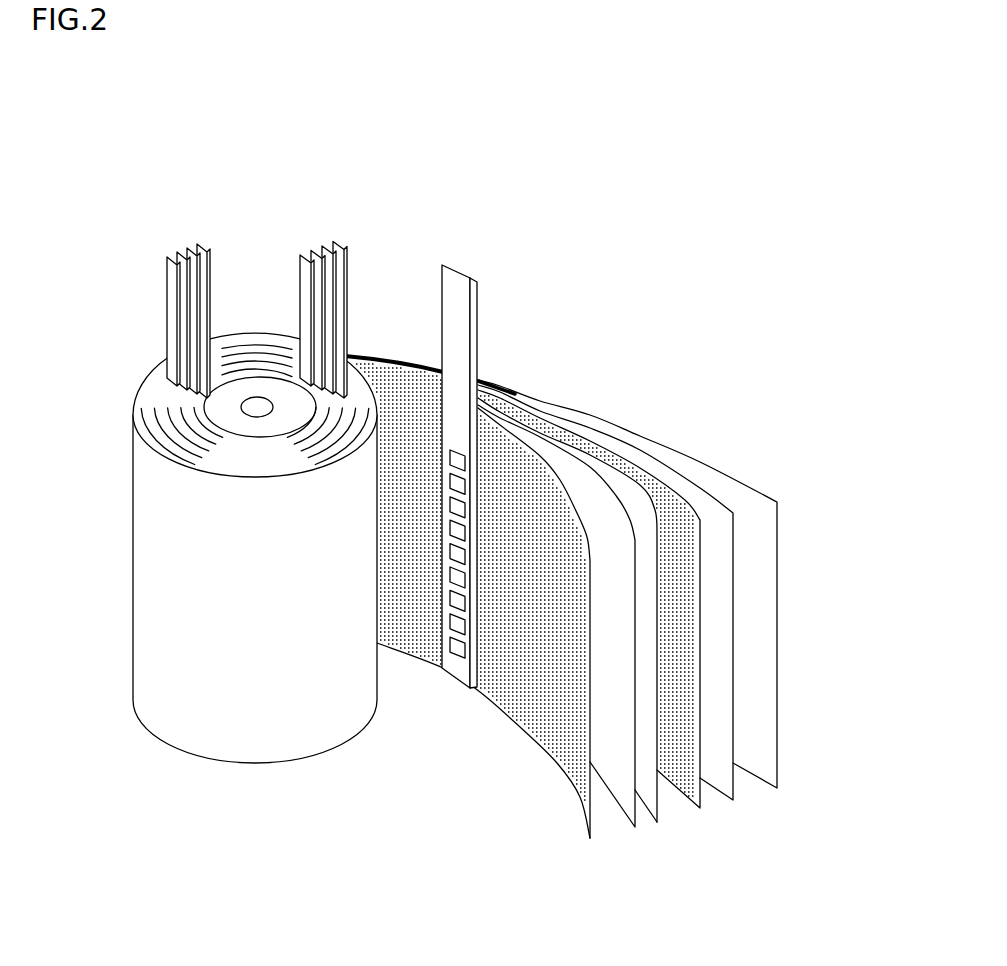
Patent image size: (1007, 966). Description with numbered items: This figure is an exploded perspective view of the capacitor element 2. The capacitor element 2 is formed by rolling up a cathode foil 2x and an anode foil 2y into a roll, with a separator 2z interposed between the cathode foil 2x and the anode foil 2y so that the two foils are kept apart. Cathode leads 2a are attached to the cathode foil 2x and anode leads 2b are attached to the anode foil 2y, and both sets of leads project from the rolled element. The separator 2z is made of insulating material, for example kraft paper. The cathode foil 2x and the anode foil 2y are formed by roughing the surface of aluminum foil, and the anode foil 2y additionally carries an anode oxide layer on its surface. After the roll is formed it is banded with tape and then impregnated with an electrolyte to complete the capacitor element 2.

The capacitor element 2 is at (556, 228).
The cathode leads 2a is at (169, 257).
The anode leads 2b is at (447, 262).
The cathode foil 2x is at (562, 715).
The anode foil 2y is at (683, 603).
The separator 2z is at (623, 498).